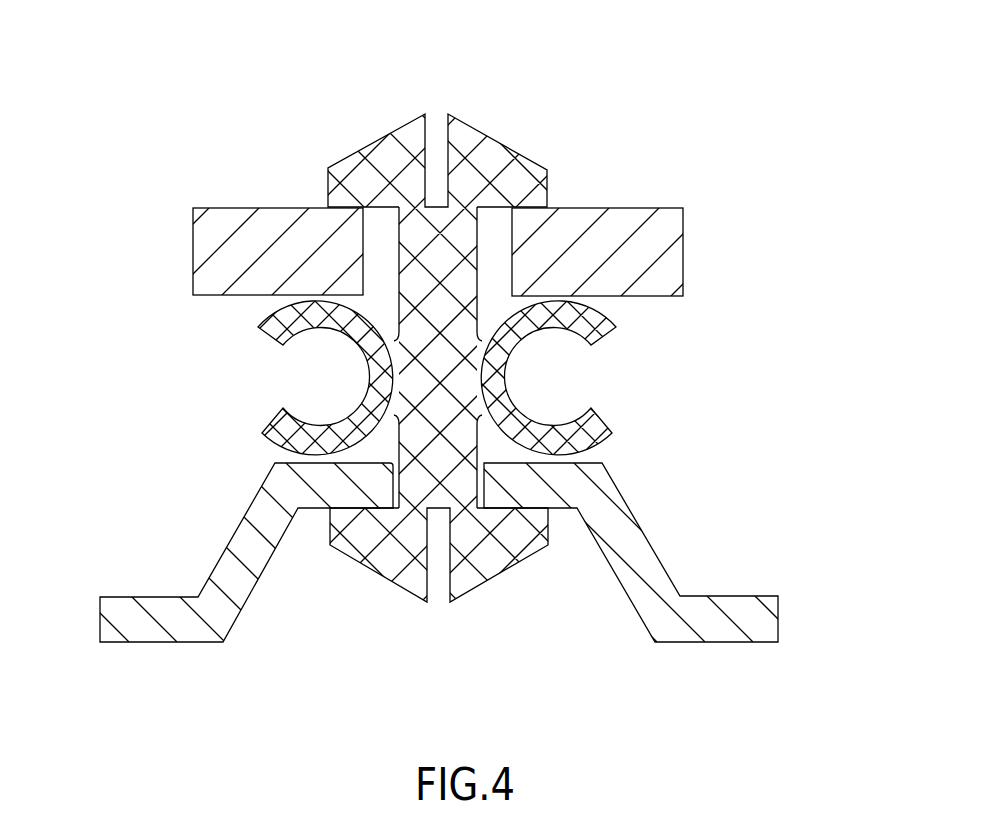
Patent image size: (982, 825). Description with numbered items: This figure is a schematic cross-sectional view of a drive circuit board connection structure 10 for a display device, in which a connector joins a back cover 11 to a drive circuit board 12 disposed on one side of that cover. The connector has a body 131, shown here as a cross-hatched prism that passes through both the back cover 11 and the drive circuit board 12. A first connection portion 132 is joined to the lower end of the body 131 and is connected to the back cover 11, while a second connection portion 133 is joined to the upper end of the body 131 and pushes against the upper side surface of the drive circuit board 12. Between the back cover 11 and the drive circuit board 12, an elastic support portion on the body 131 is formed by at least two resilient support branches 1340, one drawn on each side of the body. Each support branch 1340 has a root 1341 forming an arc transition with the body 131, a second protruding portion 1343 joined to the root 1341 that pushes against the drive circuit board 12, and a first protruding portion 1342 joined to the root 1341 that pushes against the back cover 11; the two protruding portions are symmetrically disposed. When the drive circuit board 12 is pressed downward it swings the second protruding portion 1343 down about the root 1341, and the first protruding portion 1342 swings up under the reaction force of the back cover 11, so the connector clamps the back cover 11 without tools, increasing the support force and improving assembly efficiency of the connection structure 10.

The drive circuit board connection structure 10 is at (378, 84).
The back cover 11 is at (180, 623).
The drive circuit board 12 is at (207, 243).
The body 131 is at (427, 332).
The first connection portion 132 is at (399, 557).
The second connection portion 133 is at (490, 158).
The support branch 1340 is at (481, 337).
The root 1341 is at (502, 376).
The first protruding portion 1342 is at (572, 438).
The second protruding portion 1343 is at (571, 313).